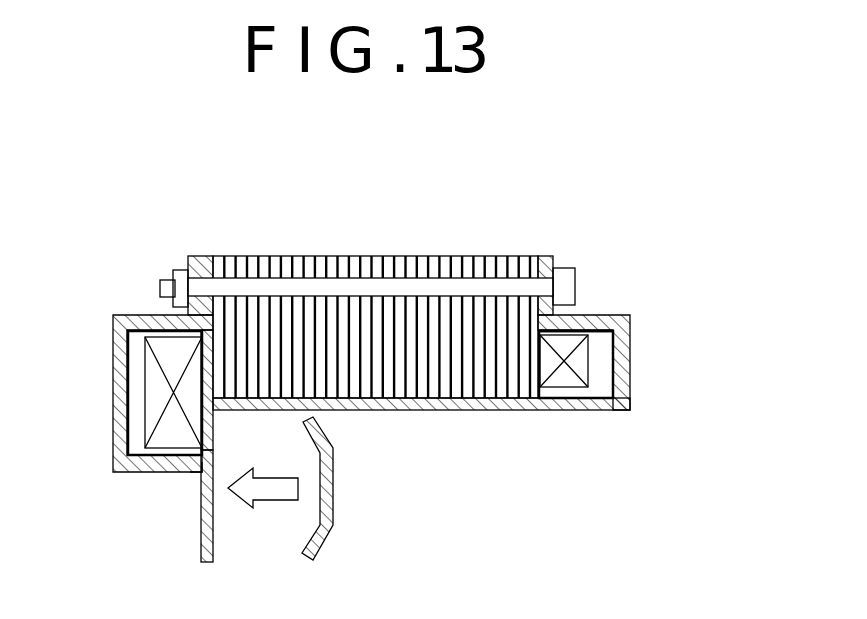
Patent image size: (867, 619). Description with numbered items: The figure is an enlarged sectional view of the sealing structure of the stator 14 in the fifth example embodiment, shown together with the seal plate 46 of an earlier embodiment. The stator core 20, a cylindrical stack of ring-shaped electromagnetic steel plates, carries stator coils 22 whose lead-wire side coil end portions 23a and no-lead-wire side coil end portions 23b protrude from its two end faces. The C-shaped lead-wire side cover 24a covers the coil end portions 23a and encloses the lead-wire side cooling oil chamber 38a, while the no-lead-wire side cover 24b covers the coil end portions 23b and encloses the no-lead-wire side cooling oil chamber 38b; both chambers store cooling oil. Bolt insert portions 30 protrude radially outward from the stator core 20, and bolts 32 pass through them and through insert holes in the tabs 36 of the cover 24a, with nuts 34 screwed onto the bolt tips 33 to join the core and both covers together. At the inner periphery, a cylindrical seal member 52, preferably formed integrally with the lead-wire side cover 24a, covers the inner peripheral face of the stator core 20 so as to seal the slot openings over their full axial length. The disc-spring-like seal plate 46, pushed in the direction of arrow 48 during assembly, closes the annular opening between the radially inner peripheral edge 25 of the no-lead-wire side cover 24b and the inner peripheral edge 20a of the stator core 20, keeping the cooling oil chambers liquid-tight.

The stator 14 is at (668, 333).
The stator core 20 is at (382, 255).
The inner peripheral edge of the stator core 20a is at (213, 410).
The stator coil 22 is at (590, 333).
The lead-wire side coil end portion 23a is at (592, 373).
The no-lead-wire side coil end portion 23b is at (150, 400).
The lead-wire side cover 24a is at (632, 323).
The no-lead-wire side cover 24b is at (112, 327).
The radially inner peripheral edge of the no-lead-wire side cover 25 is at (200, 478).
The bolt insert portion 30 is at (317, 255).
The bolt 32 is at (567, 267).
The bolt tip 33 is at (163, 283).
The nut 34 is at (180, 270).
The tab 36 is at (197, 258).
The lead-wire side cooling oil chamber 38a is at (600, 357).
The no-lead-wire side cooling oil chamber 38b is at (137, 355).
The seal plate 46 is at (213, 555).
The arrow 48 is at (280, 473).
The seal member 52 is at (503, 412).